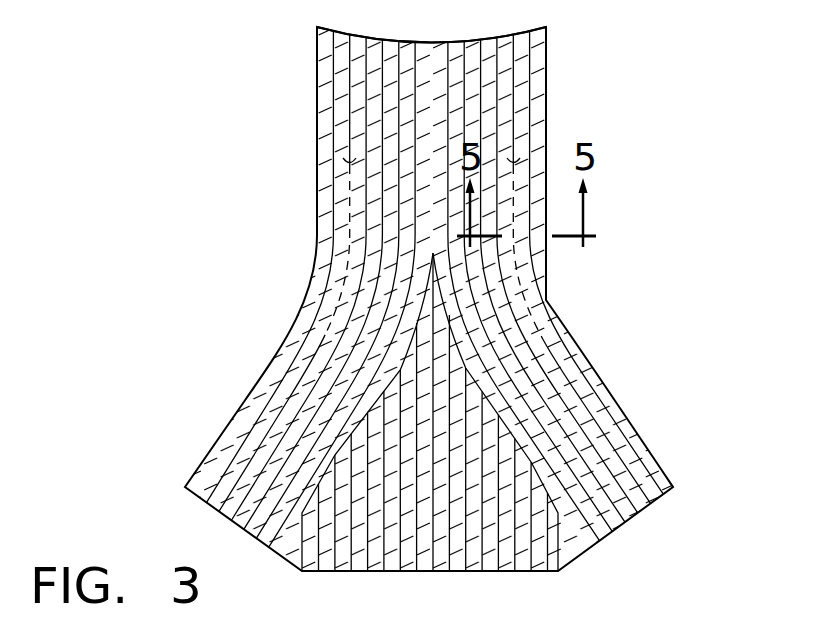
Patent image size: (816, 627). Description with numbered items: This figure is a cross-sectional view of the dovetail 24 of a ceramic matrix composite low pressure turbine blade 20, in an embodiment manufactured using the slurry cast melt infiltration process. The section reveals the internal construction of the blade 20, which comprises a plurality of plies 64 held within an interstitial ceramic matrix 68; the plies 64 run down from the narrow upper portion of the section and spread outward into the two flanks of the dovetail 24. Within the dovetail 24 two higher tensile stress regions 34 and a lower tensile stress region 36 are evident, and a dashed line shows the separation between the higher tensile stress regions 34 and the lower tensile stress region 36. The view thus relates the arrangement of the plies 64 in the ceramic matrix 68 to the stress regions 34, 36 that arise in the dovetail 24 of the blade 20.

The CMC LPT blade 20 is at (652, 114).
The interstitial ceramic matrix 68 is at (333, 82).
The plies 64 is at (258, 382).
The dovetail 24 is at (637, 432).
The lower tensile stress region 36 is at (455, 555).
The higher tensile stress regions 34 is at (343, 280).